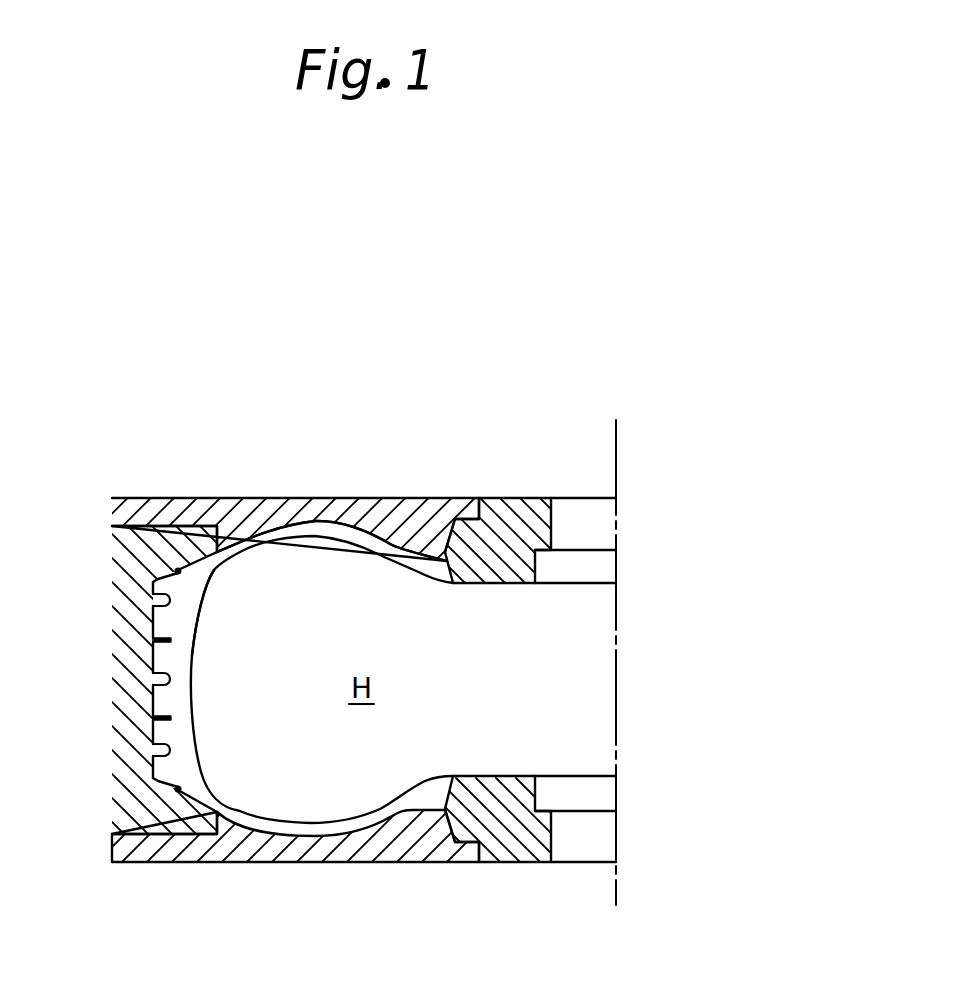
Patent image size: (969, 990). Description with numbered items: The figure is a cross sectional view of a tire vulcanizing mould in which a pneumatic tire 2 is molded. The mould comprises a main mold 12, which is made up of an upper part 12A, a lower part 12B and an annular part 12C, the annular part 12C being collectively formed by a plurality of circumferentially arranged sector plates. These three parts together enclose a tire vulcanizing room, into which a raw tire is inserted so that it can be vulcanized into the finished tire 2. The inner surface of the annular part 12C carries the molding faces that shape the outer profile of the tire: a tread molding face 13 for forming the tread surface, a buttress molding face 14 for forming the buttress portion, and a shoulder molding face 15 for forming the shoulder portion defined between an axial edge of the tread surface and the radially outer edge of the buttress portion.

The tire 2 is at (228, 811).
The main mold 12 is at (319, 623).
The upper part 12A is at (296, 509).
The lower part 12B is at (340, 858).
The annular part 12C is at (112, 665).
The tread molding face 13 is at (153, 630).
The buttress molding face 14 is at (226, 556).
The shoulder molding face 15 is at (163, 588).